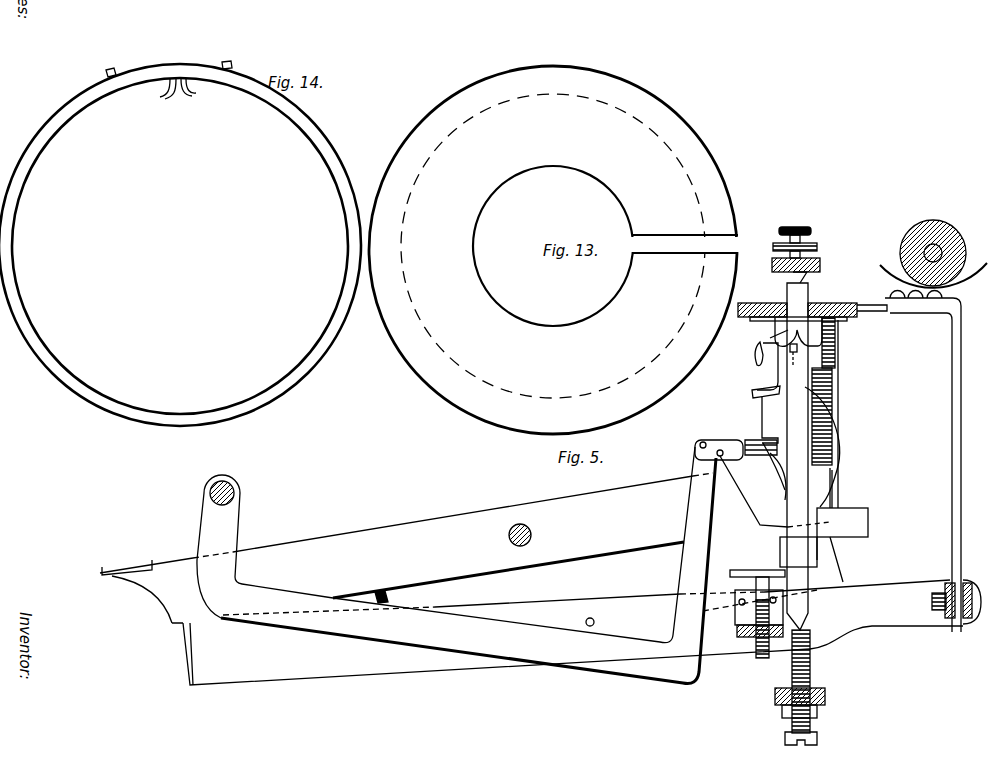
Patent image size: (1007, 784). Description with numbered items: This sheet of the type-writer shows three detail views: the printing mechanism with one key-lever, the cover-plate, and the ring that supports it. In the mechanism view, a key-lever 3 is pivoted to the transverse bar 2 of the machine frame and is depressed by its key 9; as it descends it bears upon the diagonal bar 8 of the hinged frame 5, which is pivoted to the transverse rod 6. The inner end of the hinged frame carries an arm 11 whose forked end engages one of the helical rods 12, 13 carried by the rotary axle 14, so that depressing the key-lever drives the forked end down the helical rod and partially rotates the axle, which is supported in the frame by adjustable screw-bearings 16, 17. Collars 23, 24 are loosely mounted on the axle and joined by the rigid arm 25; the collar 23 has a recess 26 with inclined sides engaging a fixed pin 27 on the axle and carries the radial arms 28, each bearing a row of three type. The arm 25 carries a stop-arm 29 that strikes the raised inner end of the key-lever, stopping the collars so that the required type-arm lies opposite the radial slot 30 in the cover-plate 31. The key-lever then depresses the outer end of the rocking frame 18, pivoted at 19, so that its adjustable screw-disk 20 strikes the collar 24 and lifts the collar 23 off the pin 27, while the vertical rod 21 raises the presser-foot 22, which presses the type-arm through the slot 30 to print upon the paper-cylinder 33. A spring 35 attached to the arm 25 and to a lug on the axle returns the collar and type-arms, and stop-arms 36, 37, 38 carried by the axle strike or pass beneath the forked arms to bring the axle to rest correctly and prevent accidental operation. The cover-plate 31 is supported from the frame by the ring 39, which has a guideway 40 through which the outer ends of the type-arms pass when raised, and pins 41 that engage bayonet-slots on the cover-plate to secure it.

In FIG. 5, the transverse bar 2 is at (525, 524).
In FIG. 5, the key-levers 3 is at (390, 533).
In FIG. 5, the hinged frame 5 is at (540, 650).
In FIG. 5, the transverse rod 6 is at (230, 486).
In FIG. 5, the diagonal bar 8 is at (390, 597).
In FIG. 5, the keys 9 is at (138, 566).
In FIG. 5, the arm 11 is at (700, 503).
In FIG. 5, the helical rod 12 is at (838, 437).
In FIG. 5, the helical rod 13 is at (762, 425).
In FIG. 5, the rotary axle 14 is at (798, 475).
In FIG. 5, the adjustable screw-bearing 16 is at (810, 648).
In FIG. 5, the adjustable screw-bearing 17 is at (812, 262).
In FIG. 5, the rocking frame 18 is at (357, 660).
In FIG. 5, the pivot 19 is at (591, 618).
In FIG. 5, the adjustable screw-disk 20 is at (745, 575).
In FIG. 5, the vertical rod 21 is at (952, 391).
In FIG. 5, the presser-foot 22 is at (933, 308).
In FIG. 5, the collar 23 is at (778, 326).
In FIG. 5, the collar 24 is at (811, 559).
In FIG. 5, the rigid arm 25 is at (832, 496).
In FIG. 5, the recess 26 is at (773, 339).
In FIG. 5, the fixed pin 27 is at (802, 363).
In FIG. 5, the radial arms 28 is at (860, 304).
In FIG. 5, the stop-arm 29 is at (842, 522).
In FIG. 13, the radial slot 30 is at (686, 245).
In FIG. 13, the cover-plate 31 is at (553, 250).
In FIG. 5, the paper-cylinder 33 is at (933, 254).
In FIG. 5, the spring 35 is at (836, 353).
In FIG. 5, the stop-arm 36 is at (834, 388).
In FIG. 5, the stop-arm 37 is at (760, 362).
In FIG. 5, the stop-arm 38 is at (757, 382).
In FIG. 14, the ring 39 is at (330, 164).
In FIG. 14, the guideway 40 is at (188, 93).
In FIG. 14, the pins 41 is at (106, 74).